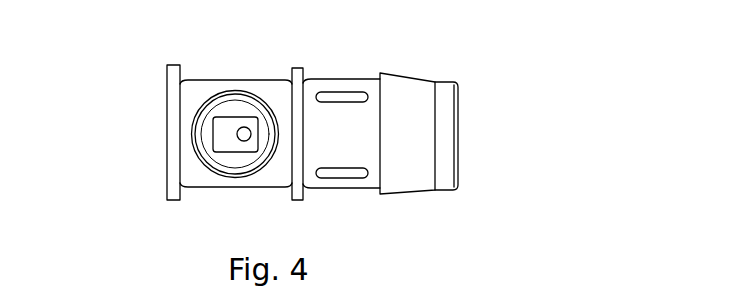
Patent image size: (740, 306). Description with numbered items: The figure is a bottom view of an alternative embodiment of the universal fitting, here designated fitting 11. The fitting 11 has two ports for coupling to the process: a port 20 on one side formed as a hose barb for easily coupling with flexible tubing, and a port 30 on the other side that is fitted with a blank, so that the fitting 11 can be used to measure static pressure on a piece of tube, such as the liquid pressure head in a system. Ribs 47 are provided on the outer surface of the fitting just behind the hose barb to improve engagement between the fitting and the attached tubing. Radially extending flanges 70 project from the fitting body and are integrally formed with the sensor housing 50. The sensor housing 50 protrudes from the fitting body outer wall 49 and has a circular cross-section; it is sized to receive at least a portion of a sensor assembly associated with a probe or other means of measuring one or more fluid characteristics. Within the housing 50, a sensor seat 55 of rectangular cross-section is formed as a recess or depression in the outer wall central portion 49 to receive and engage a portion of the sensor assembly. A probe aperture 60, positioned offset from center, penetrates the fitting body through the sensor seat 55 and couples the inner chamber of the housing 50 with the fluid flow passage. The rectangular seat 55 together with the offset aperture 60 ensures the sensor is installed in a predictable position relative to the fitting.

The fitting 11 is at (537, 85).
The inlet port 20 is at (458, 150).
The outlet port 30 is at (167, 143).
The ribs 47 is at (358, 178).
The fitting body outer wall 49 is at (237, 157).
The sensor housing 50 is at (224, 174).
The sensor seat 55 is at (222, 130).
The probe aperture 60 is at (243, 126).
The radially extending flanges 70 is at (298, 67).